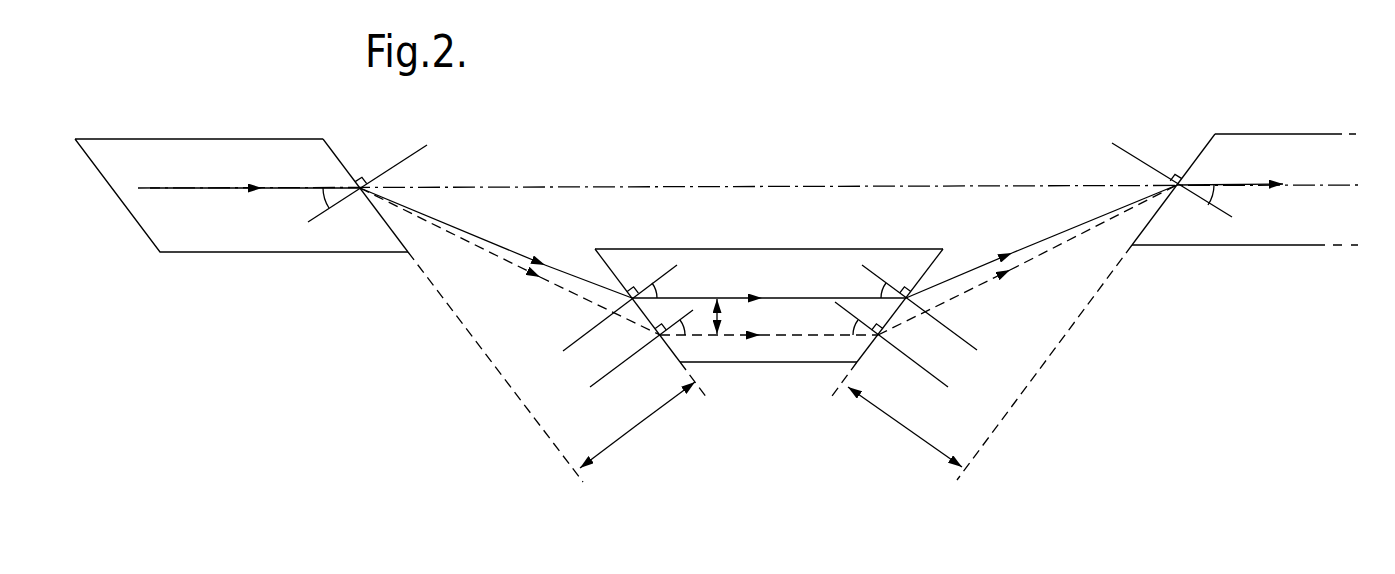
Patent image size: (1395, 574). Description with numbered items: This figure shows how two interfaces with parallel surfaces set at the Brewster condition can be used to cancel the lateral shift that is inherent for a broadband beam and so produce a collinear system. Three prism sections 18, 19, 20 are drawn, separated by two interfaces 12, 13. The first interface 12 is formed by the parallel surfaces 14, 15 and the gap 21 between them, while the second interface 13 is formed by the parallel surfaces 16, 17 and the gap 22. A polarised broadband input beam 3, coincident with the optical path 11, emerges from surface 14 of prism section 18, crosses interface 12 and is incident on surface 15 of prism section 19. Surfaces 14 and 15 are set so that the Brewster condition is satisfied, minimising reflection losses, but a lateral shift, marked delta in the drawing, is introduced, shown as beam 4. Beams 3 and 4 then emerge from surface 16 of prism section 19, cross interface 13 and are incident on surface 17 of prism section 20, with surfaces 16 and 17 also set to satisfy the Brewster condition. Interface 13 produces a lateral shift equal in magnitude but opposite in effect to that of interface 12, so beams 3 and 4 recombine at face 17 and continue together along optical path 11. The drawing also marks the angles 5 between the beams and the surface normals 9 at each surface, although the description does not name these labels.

The polarised broadband input beam 3 is at (201, 193).
The beam 4 is at (558, 287).
The deflection angle 5 is at (323, 196).
The beam splitter normal 9 is at (410, 155).
The optical path 11 is at (808, 185).
The interface 12 is at (637, 425).
The interface 13 is at (905, 427).
The surface 14 is at (388, 225).
The surface 15 is at (617, 275).
The surface 16 is at (947, 250).
The surface 17 is at (1205, 147).
The prism section 18 is at (294, 157).
The prism section 19 is at (735, 268).
The prism section 20 is at (1243, 148).
The gap 21 is at (548, 398).
The gap 22 is at (993, 395).